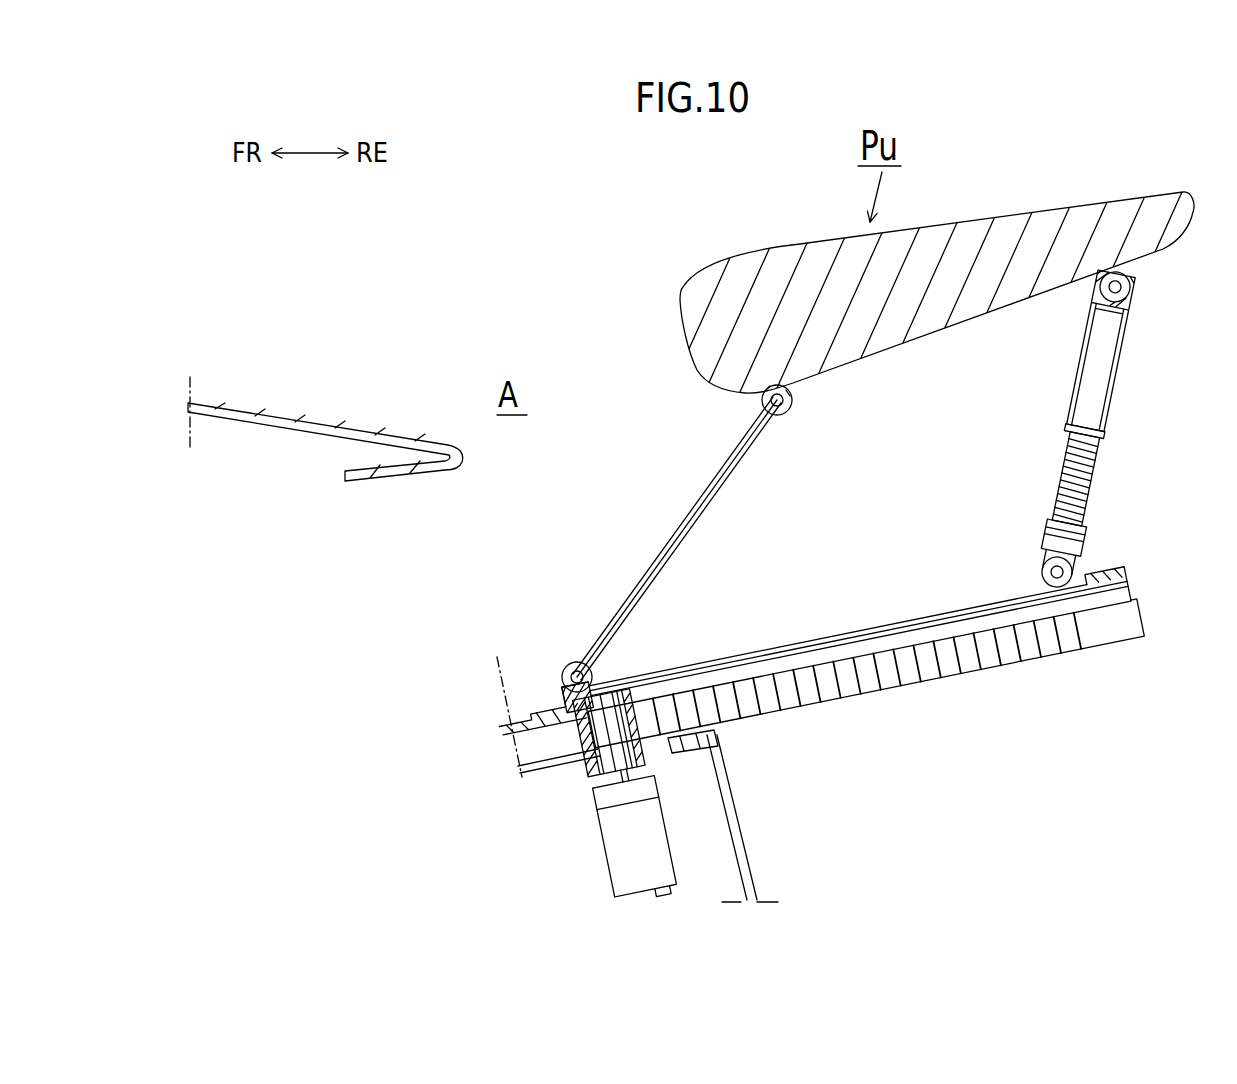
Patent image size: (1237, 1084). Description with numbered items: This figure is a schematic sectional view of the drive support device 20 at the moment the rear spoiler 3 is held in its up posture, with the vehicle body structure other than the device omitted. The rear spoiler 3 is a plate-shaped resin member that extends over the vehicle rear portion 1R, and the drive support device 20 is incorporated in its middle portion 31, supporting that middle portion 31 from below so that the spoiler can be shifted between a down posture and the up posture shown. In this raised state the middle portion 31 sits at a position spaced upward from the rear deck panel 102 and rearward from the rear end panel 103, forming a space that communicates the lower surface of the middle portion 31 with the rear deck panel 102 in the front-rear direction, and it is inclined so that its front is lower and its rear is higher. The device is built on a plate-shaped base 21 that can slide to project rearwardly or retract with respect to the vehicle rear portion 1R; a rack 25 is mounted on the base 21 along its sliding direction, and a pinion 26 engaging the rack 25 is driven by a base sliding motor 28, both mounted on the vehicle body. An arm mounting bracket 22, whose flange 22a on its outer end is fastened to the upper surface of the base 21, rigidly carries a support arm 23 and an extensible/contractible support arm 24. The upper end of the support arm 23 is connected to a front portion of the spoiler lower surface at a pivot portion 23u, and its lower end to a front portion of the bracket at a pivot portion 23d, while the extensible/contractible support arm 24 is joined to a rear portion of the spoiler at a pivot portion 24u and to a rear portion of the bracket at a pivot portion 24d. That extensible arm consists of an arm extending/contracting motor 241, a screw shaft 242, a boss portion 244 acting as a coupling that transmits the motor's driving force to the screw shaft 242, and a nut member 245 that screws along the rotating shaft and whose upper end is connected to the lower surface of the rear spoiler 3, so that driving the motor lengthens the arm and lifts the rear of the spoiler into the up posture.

The vehicle rear portion 1R is at (320, 382).
The rear deck panel 102 is at (272, 410).
The rear end panel 103 is at (745, 808).
The rear spoiler 3 is at (987, 212).
The middle portion 31 is at (1070, 203).
The drive support device 20 is at (655, 455).
The base 21 is at (1112, 652).
The arm mounting bracket 22 is at (825, 632).
The flange 22a is at (1110, 580).
The support arm 23 is at (683, 523).
The pivot portion 23u is at (795, 405).
The pivot portion 23d is at (566, 660).
The extensible/contractible support arm 24 is at (1038, 408).
The pivot portion 24u is at (1133, 297).
The pivot portion 24d is at (1038, 572).
The arm extending/contracting motor 241 is at (1045, 543).
The screw shaft 242 is at (1090, 497).
The boss portion 244 is at (1048, 527).
The nut member 245 is at (1117, 398).
The rack 25 is at (850, 700).
The pinion 26 is at (597, 740).
The base sliding motor 28 is at (600, 848).